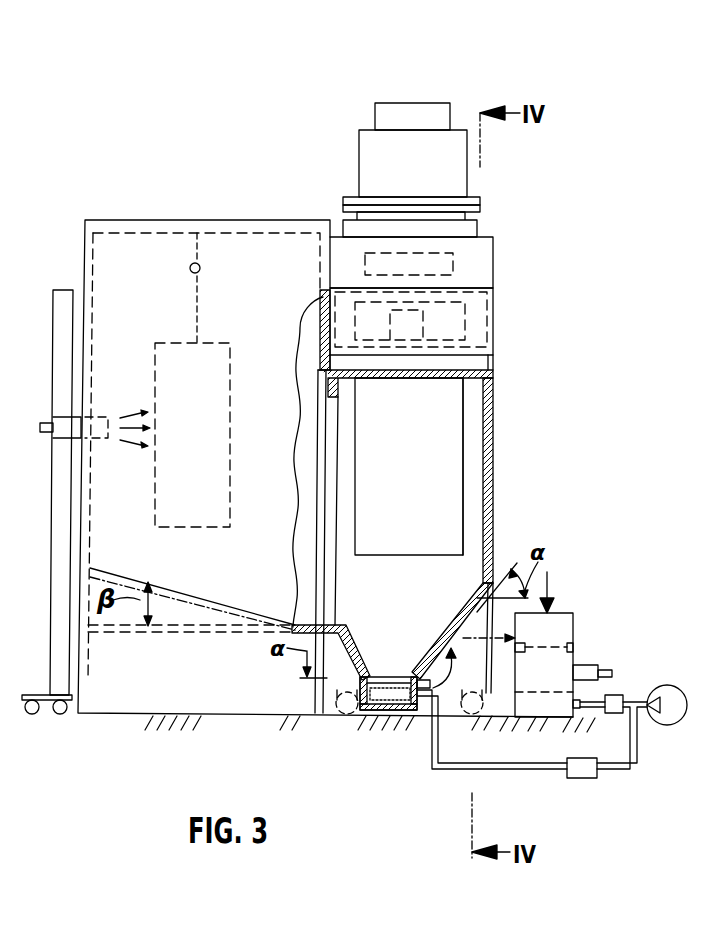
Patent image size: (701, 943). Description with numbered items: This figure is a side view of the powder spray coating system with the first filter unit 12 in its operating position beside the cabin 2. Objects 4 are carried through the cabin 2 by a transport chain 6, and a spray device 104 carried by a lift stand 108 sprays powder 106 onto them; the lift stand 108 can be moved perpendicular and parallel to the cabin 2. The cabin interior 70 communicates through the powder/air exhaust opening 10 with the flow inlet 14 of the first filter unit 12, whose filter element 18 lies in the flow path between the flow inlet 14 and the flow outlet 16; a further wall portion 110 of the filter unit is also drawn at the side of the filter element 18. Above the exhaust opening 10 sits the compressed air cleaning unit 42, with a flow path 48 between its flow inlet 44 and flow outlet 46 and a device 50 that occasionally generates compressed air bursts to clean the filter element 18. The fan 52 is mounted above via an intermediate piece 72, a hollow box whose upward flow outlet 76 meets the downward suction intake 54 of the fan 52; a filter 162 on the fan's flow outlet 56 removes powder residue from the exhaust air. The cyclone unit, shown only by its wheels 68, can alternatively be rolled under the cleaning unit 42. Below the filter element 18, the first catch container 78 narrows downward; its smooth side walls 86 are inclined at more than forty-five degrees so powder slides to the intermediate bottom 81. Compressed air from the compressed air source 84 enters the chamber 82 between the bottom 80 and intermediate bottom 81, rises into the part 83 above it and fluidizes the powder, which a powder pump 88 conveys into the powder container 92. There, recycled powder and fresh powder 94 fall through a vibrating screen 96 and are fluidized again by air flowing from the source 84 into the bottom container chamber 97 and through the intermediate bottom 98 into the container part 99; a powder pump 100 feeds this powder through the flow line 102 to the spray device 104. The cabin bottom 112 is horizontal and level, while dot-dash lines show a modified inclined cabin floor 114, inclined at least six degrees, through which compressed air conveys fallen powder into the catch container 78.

The cabin 2 is at (102, 250).
The objects 4 is at (170, 492).
The transport chain 6 is at (192, 238).
The powder/air exhaust opening 10 is at (317, 515).
The first filter unit 12 is at (488, 392).
The flow inlet 14 is at (335, 575).
The flow outlet 16 is at (418, 380).
The filter element 18 is at (455, 430).
The compressed air cleaning unit 42 is at (493, 310).
The flow inlet 44 is at (473, 365).
The flow outlet 46 is at (447, 257).
The flow path 48 is at (467, 282).
The device for generation of compressed air bursts 50 is at (455, 332).
The fan 52 is at (467, 180).
The suction intake 54 is at (480, 200).
The flow outlet 56 is at (390, 133).
The wheels 68 is at (337, 717).
The interior 70 is at (307, 467).
The intermediate piece 72 is at (480, 270).
The flow outlet 76 is at (480, 209).
The first catch container 78 is at (447, 636).
The bottom 80 is at (372, 710).
The intermediate bottom 81 is at (390, 710).
The chamber 82 is at (407, 710).
The part of the catch container 83 is at (358, 655).
The compressed air source 84 is at (668, 717).
The side walls 86 is at (343, 640).
The powder pump 88 is at (388, 677).
The powder container 92 is at (560, 627).
The fresh powder 94 is at (557, 602).
The vibrating screen 96 is at (548, 643).
The bottom container chamber 97 is at (553, 712).
The intermediate bottom 98 is at (532, 693).
The container part 99 is at (560, 662).
The powder pump 100 is at (585, 683).
The flow line 102 is at (42, 424).
The spray device 104 is at (63, 436).
The powder 106 is at (133, 420).
The lift stand 108 is at (60, 617).
The insulated wall 110 is at (485, 455).
The bottom 112 is at (123, 627).
The cabin floor 114 is at (200, 605).
The filter 162 is at (380, 118).